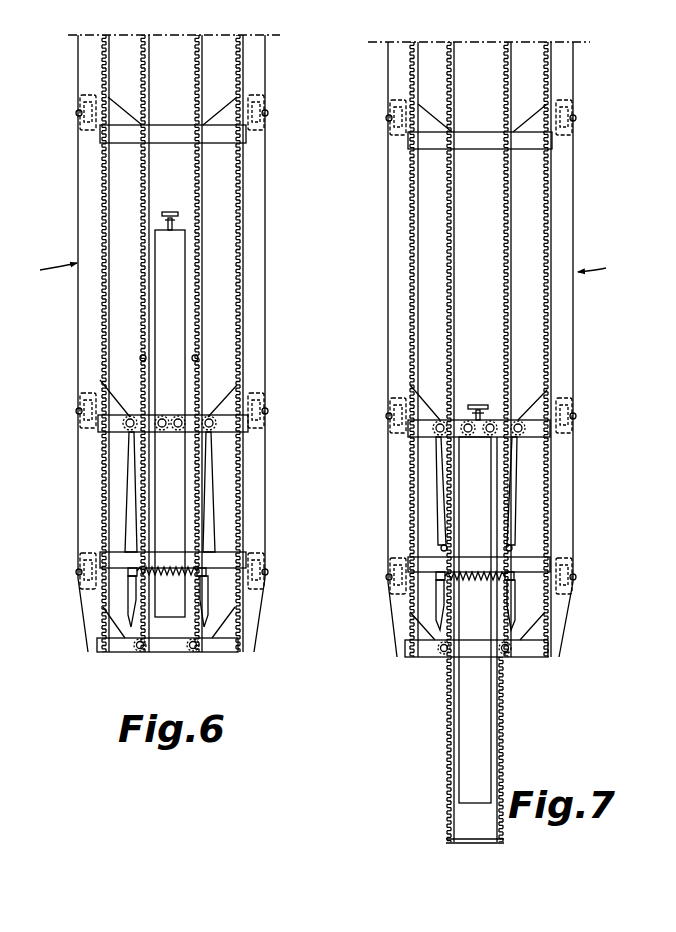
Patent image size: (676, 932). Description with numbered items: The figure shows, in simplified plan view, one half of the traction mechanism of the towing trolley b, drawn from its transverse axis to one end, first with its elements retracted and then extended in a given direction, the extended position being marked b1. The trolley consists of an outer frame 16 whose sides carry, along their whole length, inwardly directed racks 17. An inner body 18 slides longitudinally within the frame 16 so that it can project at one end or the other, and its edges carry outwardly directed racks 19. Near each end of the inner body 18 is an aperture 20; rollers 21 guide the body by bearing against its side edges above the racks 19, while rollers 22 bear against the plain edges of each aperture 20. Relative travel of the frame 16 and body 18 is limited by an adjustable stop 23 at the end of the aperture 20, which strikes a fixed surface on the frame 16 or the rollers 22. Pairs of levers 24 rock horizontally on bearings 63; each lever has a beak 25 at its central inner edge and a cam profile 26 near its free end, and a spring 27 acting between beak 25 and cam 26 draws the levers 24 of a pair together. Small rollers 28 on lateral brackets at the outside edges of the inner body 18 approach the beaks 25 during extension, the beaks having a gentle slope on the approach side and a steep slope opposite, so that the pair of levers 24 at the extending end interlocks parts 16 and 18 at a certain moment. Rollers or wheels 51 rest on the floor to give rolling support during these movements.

In FIG. 6, the outer frame 16 is at (255, 296).
In FIG. 7, the outer frame 16 is at (400, 298).
In FIG. 6, the inwardly directed racks 17 is at (103, 195).
In FIG. 7, the inwardly directed racks 17 is at (553, 194).
In FIG. 6, the inner body 18 is at (180, 52).
In FIG. 7, the inner body 18 is at (487, 58).
In FIG. 6, the outwardly directed racks 19 is at (146, 62).
In FIG. 7, the outwardly directed racks 19 is at (453, 64).
In FIG. 6, the aperture 20 is at (178, 388).
In FIG. 7, the aperture 20 is at (478, 757).
In FIG. 6, the rollers 21 is at (137, 652).
In FIG. 7, the rollers 21 is at (441, 657).
In FIG. 6, the rollers 22 is at (180, 433).
In FIG. 7, the rollers 22 is at (493, 420).
In FIG. 6, the stop 23 is at (170, 212).
In FIG. 7, the stop 23 is at (483, 408).
In FIG. 6, the levers 24 is at (132, 507).
In FIG. 7, the levers 24 is at (330, 522).
In FIG. 6, the beak 25 is at (138, 540).
In FIG. 7, the beak 25 is at (330, 552).
In FIG. 6, the cam profile 26 is at (132, 607).
In FIG. 7, the cam profile 26 is at (513, 608).
In FIG. 6, the spring 27 is at (167, 571).
In FIG. 7, the spring 27 is at (477, 580).
In FIG. 6, the small rollers 28 is at (140, 358).
In FIG. 7, the small rollers 28 is at (510, 552).
In FIG. 6, the rollers or wheels 51 is at (86, 106).
In FIG. 7, the rollers or wheels 51 is at (572, 408).
In FIG. 6, the bearings 63 is at (130, 416).
In FIG. 6, the trolley b is at (51, 272).
In FIG. 7, the direction arrow b1 is at (604, 268).